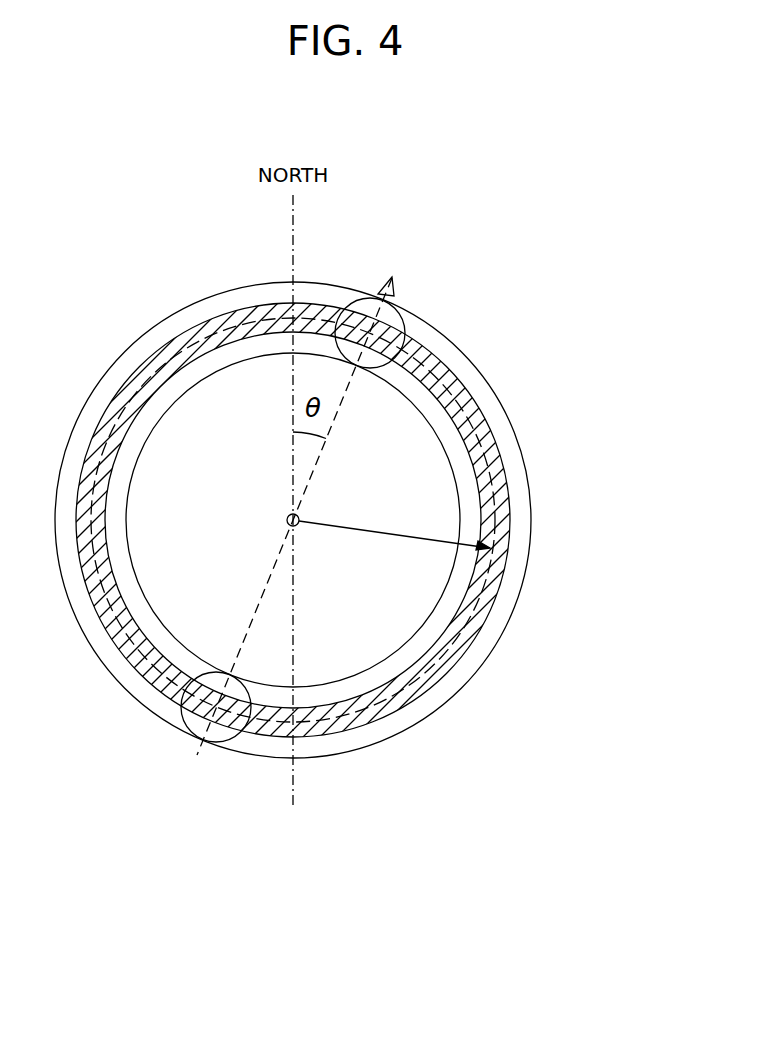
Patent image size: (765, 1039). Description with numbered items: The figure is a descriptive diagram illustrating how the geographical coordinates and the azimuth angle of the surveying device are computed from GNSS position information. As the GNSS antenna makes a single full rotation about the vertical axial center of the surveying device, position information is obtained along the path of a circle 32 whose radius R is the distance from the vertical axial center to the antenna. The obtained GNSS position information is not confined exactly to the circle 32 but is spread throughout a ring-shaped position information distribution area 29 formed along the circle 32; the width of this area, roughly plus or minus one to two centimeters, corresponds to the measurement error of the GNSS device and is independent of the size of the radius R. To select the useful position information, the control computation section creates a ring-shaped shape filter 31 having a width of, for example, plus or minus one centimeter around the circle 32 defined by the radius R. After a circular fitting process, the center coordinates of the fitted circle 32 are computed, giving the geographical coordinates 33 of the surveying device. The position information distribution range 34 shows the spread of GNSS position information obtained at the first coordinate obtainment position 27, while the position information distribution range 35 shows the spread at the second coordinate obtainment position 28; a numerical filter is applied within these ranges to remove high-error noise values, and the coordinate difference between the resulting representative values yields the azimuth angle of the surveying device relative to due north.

The first coordinate obtainment position 27 is at (408, 310).
The second coordinate obtainment position 28 is at (232, 742).
The position information distribution area 29 is at (492, 655).
The shape filter 31 is at (483, 398).
The circle 32 is at (488, 460).
The geographical coordinates 33 is at (300, 517).
The position information distribution range 34 is at (348, 302).
The position information distribution range 35 is at (185, 712).
The radius R is at (394, 524).